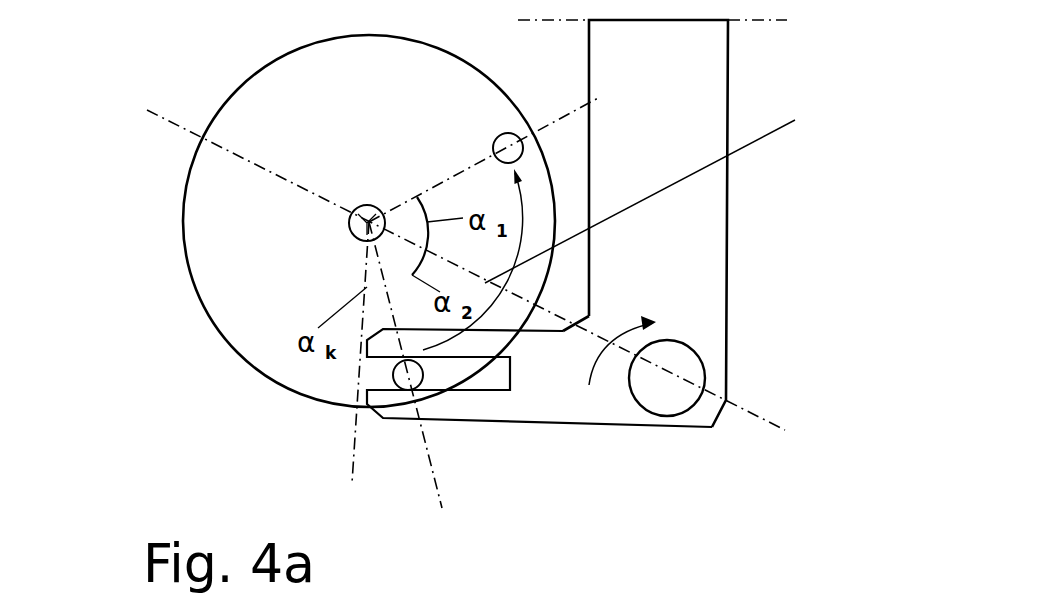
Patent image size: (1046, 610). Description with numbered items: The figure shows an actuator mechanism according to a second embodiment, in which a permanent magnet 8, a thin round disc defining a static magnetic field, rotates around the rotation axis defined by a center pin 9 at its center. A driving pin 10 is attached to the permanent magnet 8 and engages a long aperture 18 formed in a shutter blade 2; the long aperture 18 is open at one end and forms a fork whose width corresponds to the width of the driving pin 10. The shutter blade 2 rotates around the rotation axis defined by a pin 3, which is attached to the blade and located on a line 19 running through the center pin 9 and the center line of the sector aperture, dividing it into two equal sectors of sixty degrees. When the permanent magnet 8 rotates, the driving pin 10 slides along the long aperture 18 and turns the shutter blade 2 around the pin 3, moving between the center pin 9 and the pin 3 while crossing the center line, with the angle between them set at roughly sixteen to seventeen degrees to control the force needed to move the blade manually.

The shutter blade 2 is at (652, 247).
The pin 3 is at (667, 390).
The permanent magnet 8 is at (270, 203).
The center pin 9 is at (348, 230).
The driving pin 10 is at (412, 380).
The long aperture 18 is at (477, 380).
The line 19 is at (659, 193).